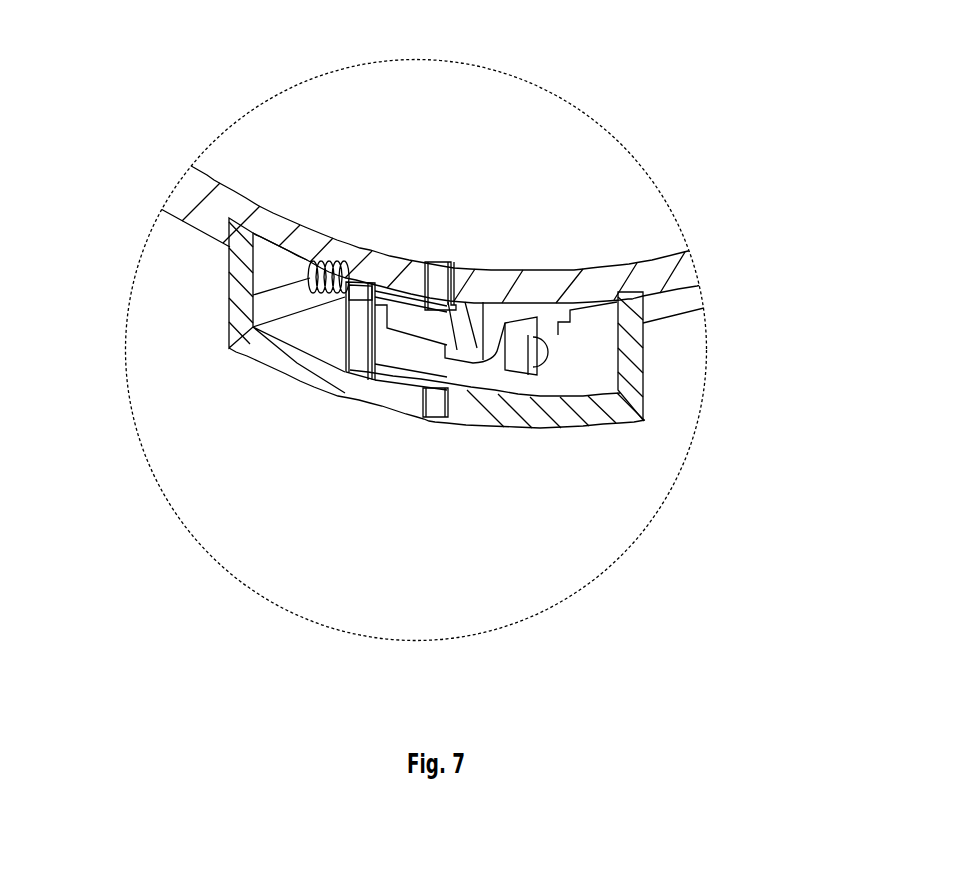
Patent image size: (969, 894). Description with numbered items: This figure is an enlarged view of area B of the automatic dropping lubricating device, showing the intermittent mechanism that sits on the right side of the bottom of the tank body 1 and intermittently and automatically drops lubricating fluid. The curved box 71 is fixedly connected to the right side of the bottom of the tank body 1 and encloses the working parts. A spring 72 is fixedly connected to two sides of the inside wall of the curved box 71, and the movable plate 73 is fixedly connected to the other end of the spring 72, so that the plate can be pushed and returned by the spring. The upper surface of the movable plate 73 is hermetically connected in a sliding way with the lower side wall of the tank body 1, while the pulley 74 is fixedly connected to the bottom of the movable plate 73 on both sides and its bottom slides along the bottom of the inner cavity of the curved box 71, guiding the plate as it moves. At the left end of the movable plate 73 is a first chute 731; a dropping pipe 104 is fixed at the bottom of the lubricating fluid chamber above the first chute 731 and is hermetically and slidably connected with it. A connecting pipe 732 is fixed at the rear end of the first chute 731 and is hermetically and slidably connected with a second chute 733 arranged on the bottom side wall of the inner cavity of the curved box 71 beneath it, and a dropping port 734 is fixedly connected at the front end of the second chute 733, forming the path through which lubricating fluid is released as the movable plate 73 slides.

The area B is at (322, 72).
The tank body 1 is at (640, 227).
The dropping pipe 104 is at (458, 270).
The curved box 71 is at (678, 385).
The spring 72 is at (325, 254).
The movable plate 73 is at (425, 330).
The first chute 731 is at (350, 265).
The connecting pipe 732 is at (360, 330).
The second chute 733 is at (445, 376).
The dropping port 734 is at (440, 403).
The pulley 74 is at (540, 347).